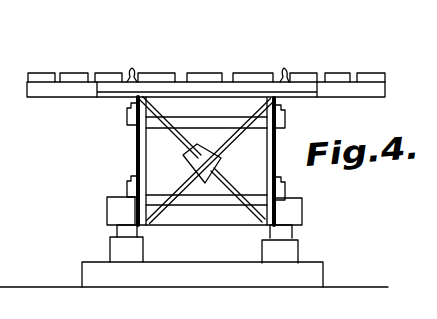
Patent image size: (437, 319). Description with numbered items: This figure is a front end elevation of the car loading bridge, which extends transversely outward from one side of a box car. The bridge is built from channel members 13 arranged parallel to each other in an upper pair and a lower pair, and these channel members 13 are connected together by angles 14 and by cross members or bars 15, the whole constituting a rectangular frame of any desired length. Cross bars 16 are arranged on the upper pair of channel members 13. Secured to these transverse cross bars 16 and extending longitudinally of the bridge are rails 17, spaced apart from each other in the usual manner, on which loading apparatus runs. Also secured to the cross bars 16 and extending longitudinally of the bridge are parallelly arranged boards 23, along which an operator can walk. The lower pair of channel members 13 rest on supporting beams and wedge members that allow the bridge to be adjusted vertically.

The channel members 13 is at (130, 106).
The angles 14 is at (140, 148).
The cross members or bars 15 is at (237, 152).
The cross bars 16 is at (57, 90).
The rails 17 is at (284, 70).
The boards 23 is at (78, 73).